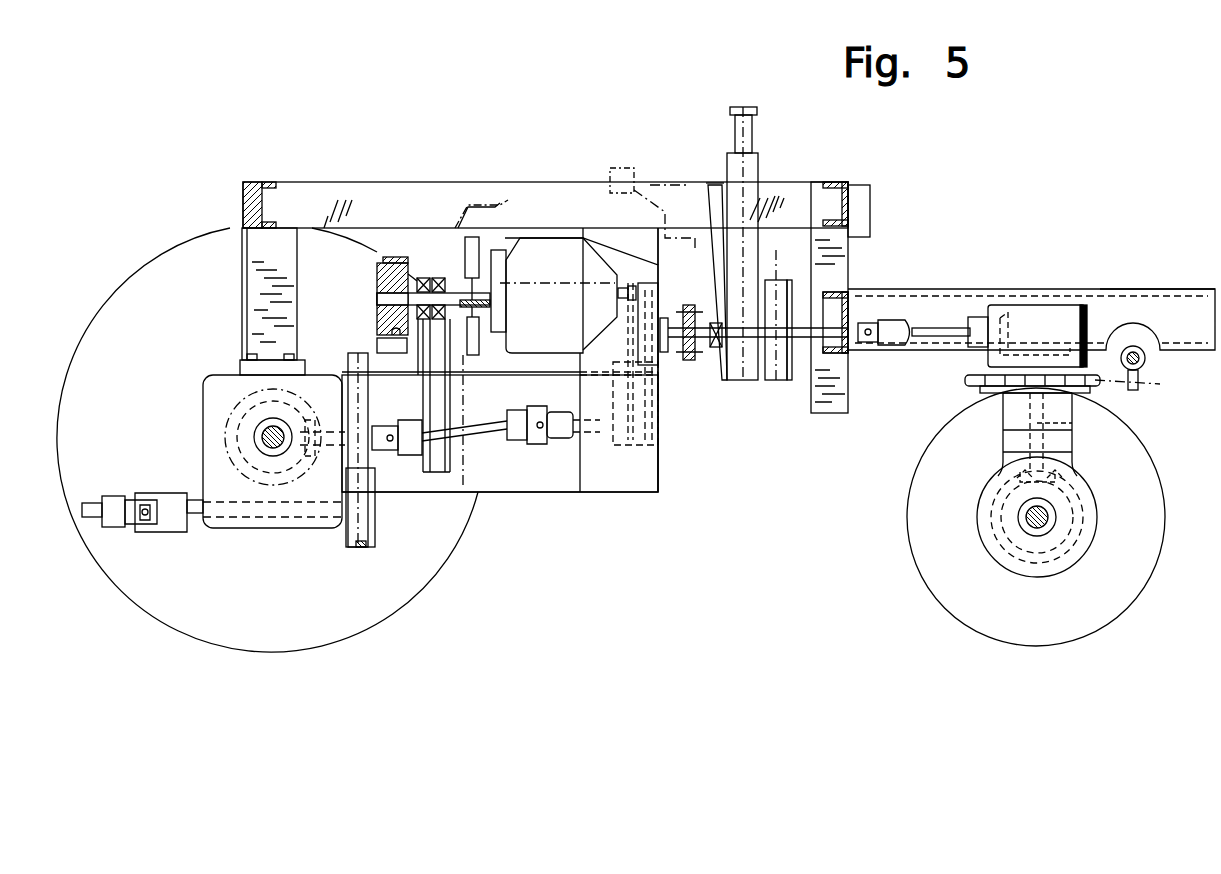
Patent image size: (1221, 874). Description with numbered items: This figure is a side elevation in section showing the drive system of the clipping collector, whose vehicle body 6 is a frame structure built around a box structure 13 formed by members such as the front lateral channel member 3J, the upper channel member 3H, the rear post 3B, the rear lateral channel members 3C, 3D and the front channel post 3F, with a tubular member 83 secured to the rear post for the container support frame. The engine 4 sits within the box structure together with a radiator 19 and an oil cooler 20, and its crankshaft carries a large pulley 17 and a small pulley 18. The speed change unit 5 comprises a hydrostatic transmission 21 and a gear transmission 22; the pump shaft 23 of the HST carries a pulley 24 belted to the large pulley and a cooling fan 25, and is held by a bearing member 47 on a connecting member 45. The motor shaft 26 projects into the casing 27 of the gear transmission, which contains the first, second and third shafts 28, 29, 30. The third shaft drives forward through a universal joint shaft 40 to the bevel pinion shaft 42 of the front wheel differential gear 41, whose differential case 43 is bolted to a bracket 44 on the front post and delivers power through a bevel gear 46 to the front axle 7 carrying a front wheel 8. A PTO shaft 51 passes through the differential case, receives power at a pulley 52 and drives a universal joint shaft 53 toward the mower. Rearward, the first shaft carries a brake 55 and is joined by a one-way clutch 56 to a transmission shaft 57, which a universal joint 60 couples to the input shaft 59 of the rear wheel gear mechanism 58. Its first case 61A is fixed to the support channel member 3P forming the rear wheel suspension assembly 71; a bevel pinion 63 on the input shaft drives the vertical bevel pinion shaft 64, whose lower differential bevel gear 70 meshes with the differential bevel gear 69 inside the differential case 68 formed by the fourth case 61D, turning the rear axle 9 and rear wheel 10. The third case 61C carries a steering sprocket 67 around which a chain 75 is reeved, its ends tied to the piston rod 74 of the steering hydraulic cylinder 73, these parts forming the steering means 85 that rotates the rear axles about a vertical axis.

The front lateral channel member 3J is at (260, 182).
The box structure 13 is at (378, 182).
The cooling fan 25 is at (470, 240).
The engine 4 is at (478, 205).
The speed change unit 5 is at (574, 302).
The hydrostatic transmission (HST) 21 is at (542, 240).
The gear transmission 22 is at (611, 226).
The radiator 19 is at (728, 162).
The upper channel member 3H is at (790, 184).
The rear lateral channel member 3C is at (854, 198).
The tubular member 83 is at (872, 215).
The front wheel 8 is at (153, 260).
The pulley 24 is at (382, 262).
The pump shaft 23 is at (455, 294).
The bearing member 47 is at (428, 278).
The front channel post 3F is at (255, 296).
The large pulley 17 is at (380, 338).
The small pulley 18 is at (348, 362).
The bracket 44 is at (245, 362).
The bevel gear 46 is at (232, 414).
The bevel pinion shaft 42 is at (344, 420).
The front axle 7 is at (258, 439).
The universal joint shaft 53 is at (97, 492).
The PTO shaft 51 is at (194, 517).
The front wheel differential gear 41 is at (312, 542).
The differential case 43 is at (362, 490).
The pulley 52 is at (364, 550).
The universal joint shaft 40 is at (486, 432).
The connecting member 45 is at (519, 493).
The third shaft 30 is at (572, 440).
The second shaft 29 is at (612, 380).
The motor shaft 26 is at (616, 297).
The casing 27 is at (646, 283).
The oil cooler 20 is at (776, 280).
The rear post 3B is at (848, 240).
The rear lateral channel member 3D is at (843, 292).
The support channel member 3P is at (946, 289).
The bevel pinion 63 is at (1024, 306).
The first case 61A is at (1055, 304).
The rear wheel gear mechanism 58 is at (1099, 298).
The rear wheel suspension assembly 71 is at (1153, 288).
The steering means 85 is at (1137, 332).
The piston rod 74 is at (1143, 349).
The steering hydraulic cylinder 73 is at (1145, 372).
The chain 75 is at (1128, 388).
The steering sprocket 67 is at (1100, 388).
The bevel pinion shaft 64 is at (1070, 430).
The third case 61C is at (1010, 427).
The fourth case 61D is at (1003, 451).
The differential bevel gear 70 is at (1058, 469).
The rear wheel 10 is at (1162, 475).
The differential case 68 is at (965, 524).
The rear axle 9 is at (1056, 517).
The differential bevel gear 69 is at (1062, 552).
The universal joint 60 is at (885, 357).
The input shaft 59 is at (939, 338).
The vehicle body 6 is at (670, 482).
The first shaft 28 is at (666, 347).
The brake 55 is at (690, 350).
The one-way clutch 56 is at (720, 349).
The transmission shaft 57 is at (788, 352).